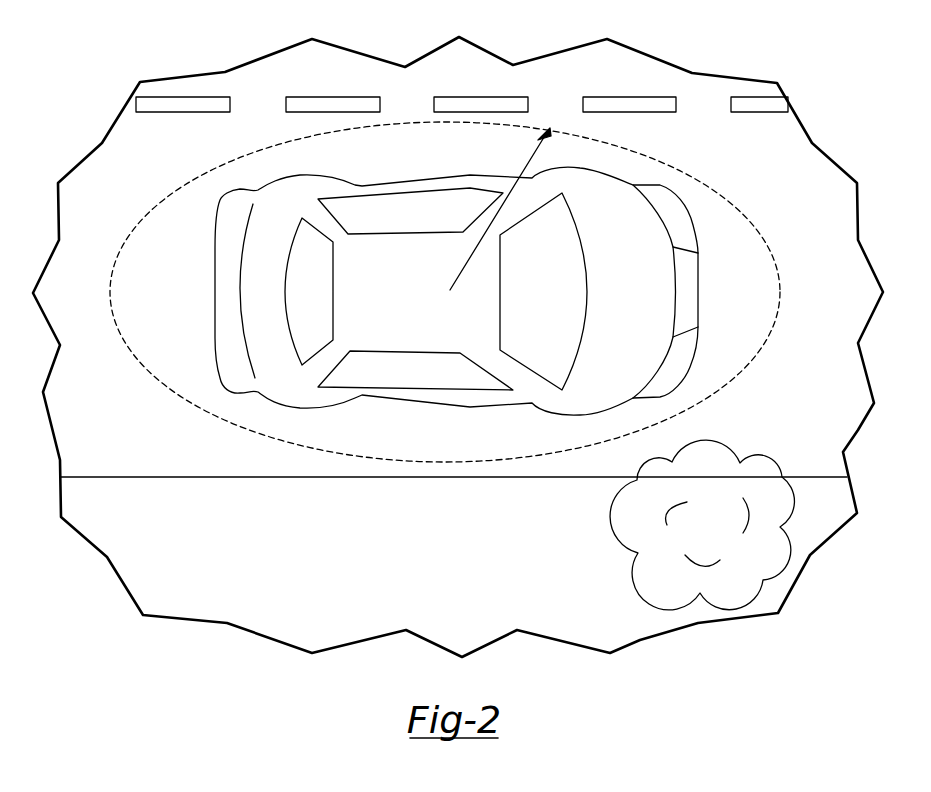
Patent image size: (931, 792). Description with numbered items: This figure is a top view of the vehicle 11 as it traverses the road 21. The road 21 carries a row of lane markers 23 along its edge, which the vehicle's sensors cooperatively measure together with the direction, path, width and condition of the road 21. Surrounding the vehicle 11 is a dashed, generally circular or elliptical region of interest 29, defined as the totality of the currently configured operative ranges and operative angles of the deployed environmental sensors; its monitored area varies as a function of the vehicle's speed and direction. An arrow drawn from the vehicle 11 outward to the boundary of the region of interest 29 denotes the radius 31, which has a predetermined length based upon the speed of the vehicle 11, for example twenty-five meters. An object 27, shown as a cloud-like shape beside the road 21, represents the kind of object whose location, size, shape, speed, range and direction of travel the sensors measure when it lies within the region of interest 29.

The vehicle 11 is at (405, 308).
The road 21 is at (797, 432).
The lane markers 23 is at (628, 97).
The object 27 is at (701, 546).
The region of interest 29 is at (202, 387).
The radius 31 is at (503, 213).